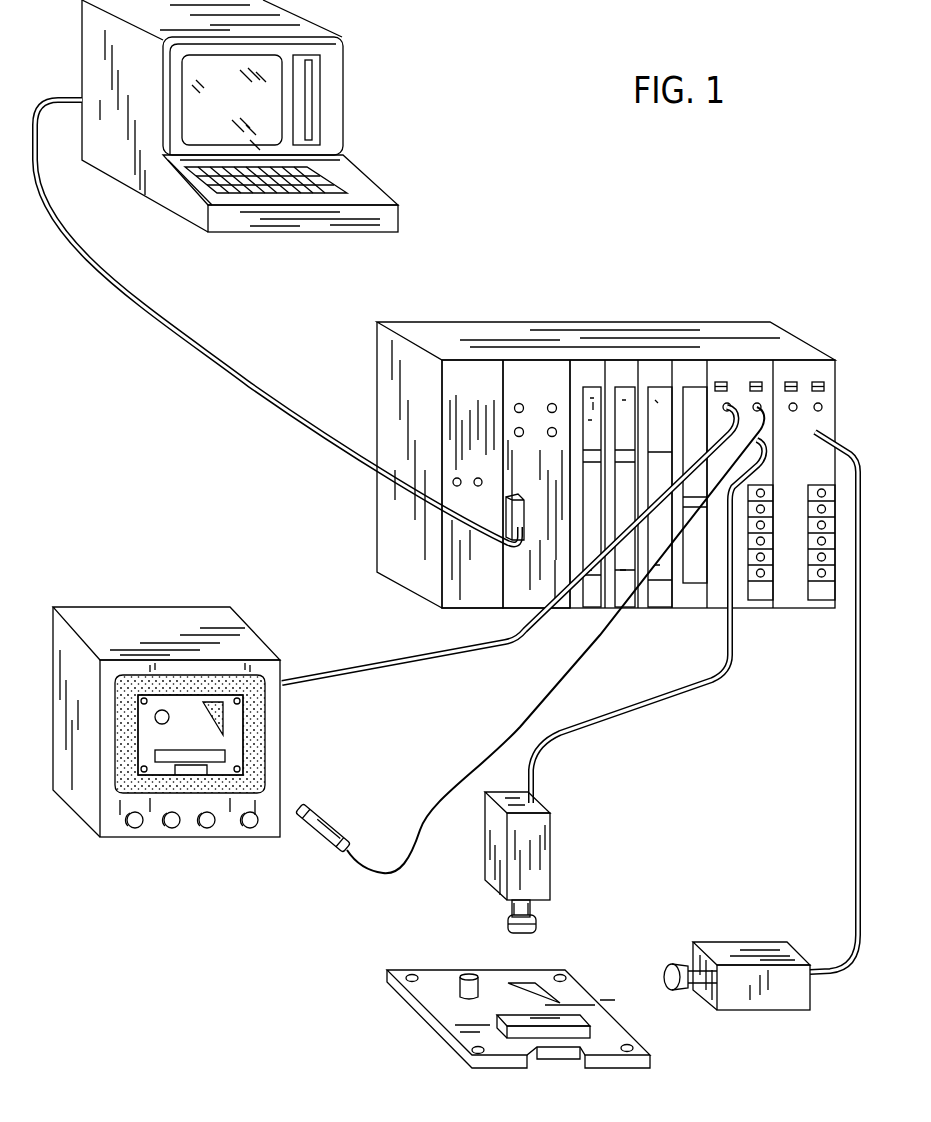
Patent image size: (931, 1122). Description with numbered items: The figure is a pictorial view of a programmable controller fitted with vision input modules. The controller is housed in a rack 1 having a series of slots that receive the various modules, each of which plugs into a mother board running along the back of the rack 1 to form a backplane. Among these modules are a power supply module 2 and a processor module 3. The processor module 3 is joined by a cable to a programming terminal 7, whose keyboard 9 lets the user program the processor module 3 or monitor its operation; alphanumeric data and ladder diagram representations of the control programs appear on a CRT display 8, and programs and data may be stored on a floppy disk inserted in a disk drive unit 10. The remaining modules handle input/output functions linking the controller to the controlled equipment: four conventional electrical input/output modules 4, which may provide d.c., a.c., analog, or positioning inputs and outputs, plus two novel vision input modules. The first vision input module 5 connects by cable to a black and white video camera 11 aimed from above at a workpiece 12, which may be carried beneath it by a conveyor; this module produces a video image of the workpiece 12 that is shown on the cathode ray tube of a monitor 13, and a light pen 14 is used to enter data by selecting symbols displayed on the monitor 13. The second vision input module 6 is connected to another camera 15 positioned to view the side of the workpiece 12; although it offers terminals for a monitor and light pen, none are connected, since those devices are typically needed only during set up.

The rack 1 is at (606, 469).
The power supply module 2 is at (470, 395).
The processor module 3 is at (546, 395).
The electrical input/output modules 4 is at (592, 605).
The first vision input module 5 is at (742, 597).
The second vision input module 6 is at (789, 594).
The programming terminal 7 is at (251, 134).
The CRT display 8 is at (250, 106).
The keyboard 9 is at (320, 183).
The disk drive unit 10 is at (308, 75).
The video camera 11 is at (543, 855).
The workpiece 12 is at (577, 992).
The monitor 13 is at (190, 830).
The light pen 14 is at (317, 830).
The camera 15 is at (737, 1000).